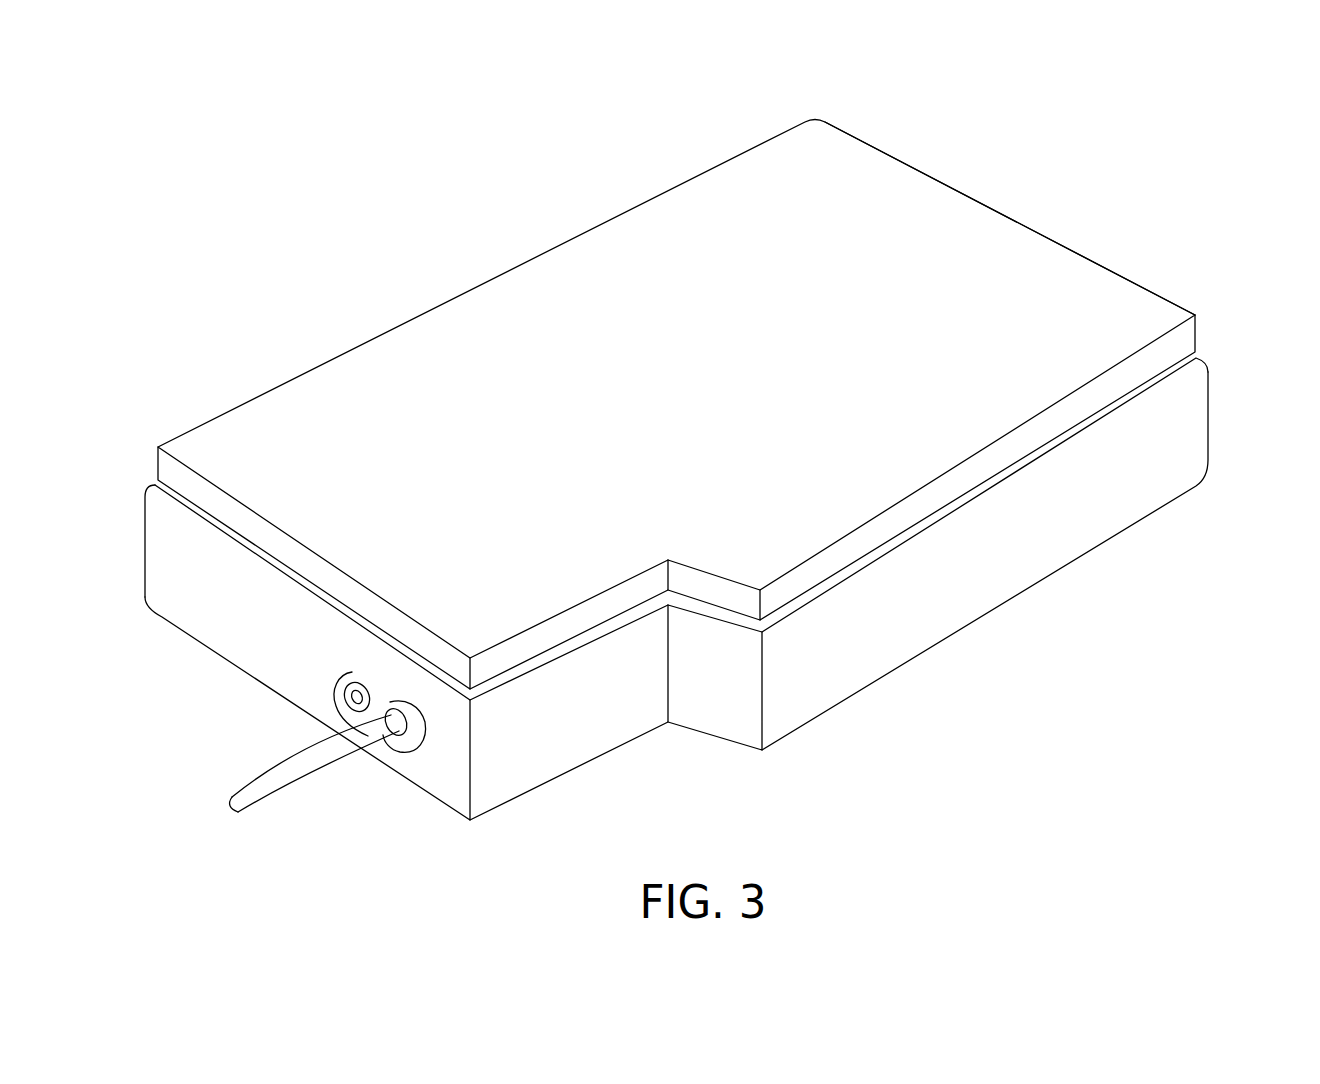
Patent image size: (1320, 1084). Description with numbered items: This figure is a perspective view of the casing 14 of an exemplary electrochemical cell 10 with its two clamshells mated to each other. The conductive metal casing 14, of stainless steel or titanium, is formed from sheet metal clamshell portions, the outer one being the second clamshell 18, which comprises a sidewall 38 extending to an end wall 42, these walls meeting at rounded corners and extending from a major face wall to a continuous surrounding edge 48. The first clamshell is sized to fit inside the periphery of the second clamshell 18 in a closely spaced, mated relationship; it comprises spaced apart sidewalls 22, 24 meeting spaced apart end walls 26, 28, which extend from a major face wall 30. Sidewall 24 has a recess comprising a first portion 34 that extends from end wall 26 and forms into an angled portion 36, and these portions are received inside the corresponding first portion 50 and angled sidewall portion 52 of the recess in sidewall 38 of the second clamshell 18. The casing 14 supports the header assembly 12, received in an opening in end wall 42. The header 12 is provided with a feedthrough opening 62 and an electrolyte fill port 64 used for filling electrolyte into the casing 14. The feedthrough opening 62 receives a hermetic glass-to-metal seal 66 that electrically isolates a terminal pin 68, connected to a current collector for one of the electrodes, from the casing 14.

The electrochemical cell 10 is at (1034, 163).
The header assembly 12 is at (412, 747).
The conductive metal casing 14 is at (1103, 628).
The second clamshell portion 18 is at (1180, 239).
The sidewall 22 is at (396, 323).
The sidewall 24 is at (1177, 342).
The end wall 26 is at (267, 536).
The end wall 28 is at (1060, 243).
The major face wall 30 is at (665, 215).
The first portion 34 is at (578, 618).
The angled portion 36 is at (720, 592).
The sidewall 38 is at (1085, 526).
The end wall 42 is at (200, 607).
The surrounding edge 48 is at (1048, 451).
The first portion 50 is at (536, 770).
The angled sidewall portion 52 is at (722, 720).
The feedthrough opening 62 is at (390, 702).
The electrolyte fill port 64 is at (352, 672).
The glass-to-metal seal 66 is at (330, 738).
The terminal pin 68 is at (229, 807).